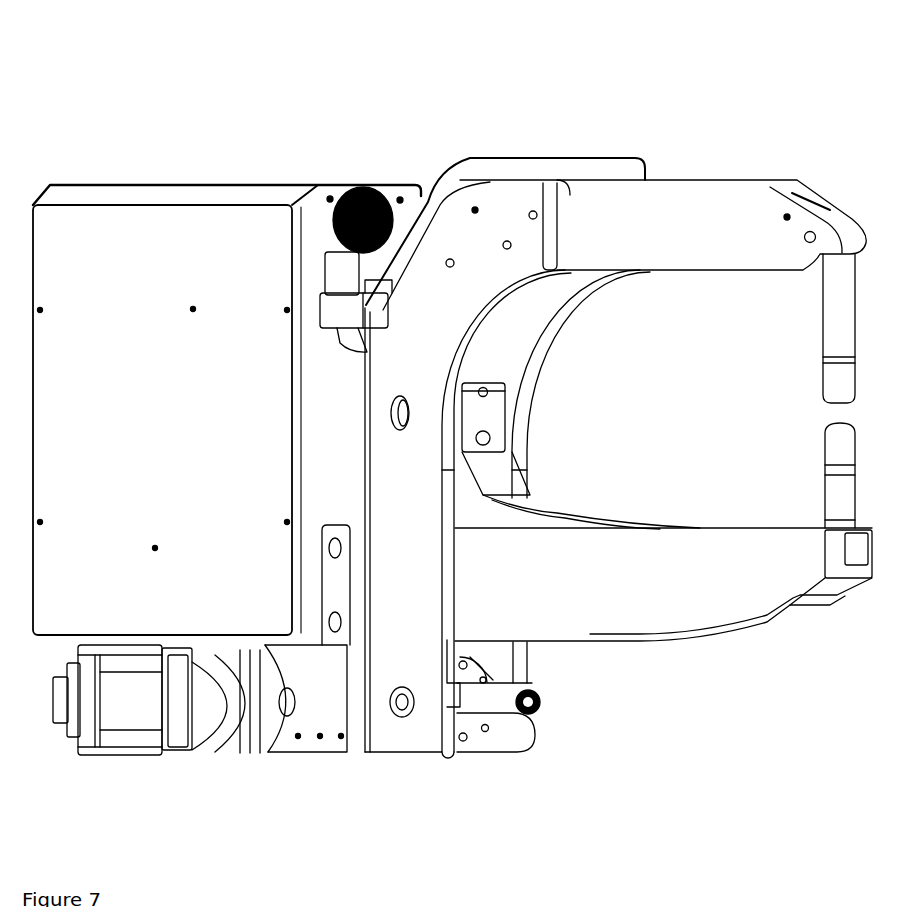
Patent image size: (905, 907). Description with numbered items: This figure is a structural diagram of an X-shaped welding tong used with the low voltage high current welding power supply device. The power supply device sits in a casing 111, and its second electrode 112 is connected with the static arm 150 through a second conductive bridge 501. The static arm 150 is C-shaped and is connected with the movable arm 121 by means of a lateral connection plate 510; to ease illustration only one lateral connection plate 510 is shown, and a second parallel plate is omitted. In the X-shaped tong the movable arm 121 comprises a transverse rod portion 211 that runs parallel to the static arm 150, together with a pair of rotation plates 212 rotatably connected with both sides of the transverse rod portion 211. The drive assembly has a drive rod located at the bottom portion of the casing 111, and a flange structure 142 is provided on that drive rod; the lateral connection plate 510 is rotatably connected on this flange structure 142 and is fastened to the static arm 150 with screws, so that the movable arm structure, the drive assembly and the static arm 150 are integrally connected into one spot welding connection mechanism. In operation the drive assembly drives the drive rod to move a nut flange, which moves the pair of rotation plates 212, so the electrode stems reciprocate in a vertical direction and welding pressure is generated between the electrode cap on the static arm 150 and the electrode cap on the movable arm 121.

The casing 111 is at (104, 205).
The second electrode 112 is at (340, 313).
The movable arm 121 is at (659, 296).
The flange structure 142 is at (245, 713).
The static arm 150 is at (635, 625).
The transverse rod portion 211 is at (654, 218).
The rotation plates 212 is at (502, 230).
The second conductive bridge 501 is at (500, 158).
The lateral connection plate 510 is at (338, 670).